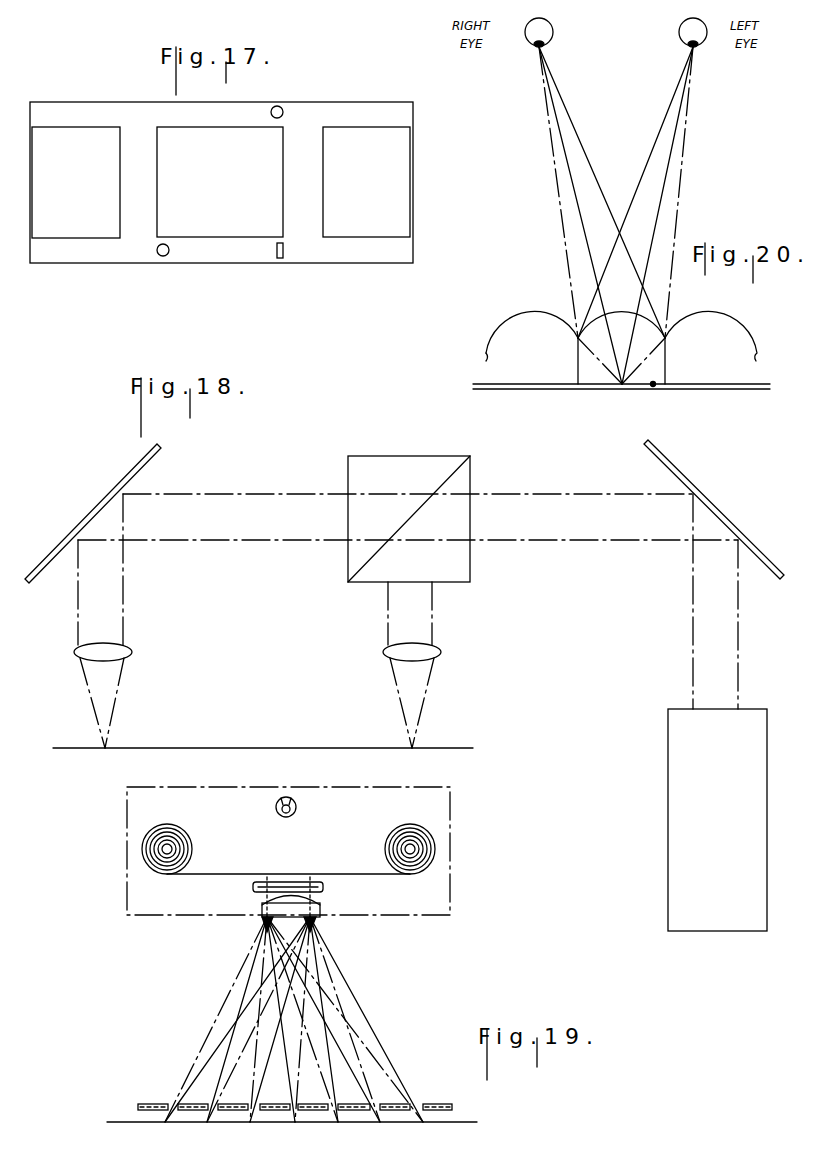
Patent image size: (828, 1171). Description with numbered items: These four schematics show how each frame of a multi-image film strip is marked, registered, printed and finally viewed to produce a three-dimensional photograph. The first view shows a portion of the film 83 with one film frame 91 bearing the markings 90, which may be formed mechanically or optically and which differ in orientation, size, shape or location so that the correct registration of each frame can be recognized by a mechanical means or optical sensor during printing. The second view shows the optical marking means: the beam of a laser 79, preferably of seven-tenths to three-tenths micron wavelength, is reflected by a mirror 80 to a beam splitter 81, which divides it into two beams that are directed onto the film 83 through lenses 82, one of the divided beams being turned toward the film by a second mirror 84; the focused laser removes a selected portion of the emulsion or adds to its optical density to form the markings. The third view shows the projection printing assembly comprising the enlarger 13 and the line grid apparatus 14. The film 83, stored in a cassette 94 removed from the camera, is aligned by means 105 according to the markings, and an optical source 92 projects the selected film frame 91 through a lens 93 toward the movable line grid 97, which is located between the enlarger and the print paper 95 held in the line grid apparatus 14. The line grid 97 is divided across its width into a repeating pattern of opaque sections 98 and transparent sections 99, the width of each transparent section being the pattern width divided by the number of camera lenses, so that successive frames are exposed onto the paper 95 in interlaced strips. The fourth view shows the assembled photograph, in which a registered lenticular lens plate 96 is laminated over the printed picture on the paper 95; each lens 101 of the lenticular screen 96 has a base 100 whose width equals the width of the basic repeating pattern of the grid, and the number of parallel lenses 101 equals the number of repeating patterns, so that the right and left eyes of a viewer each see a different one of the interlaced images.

In FIG. 19, the enlarger 13 is at (452, 852).
In FIG. 19, the line grid apparatus 14 is at (284, 1019).
In FIG. 18, the laser 79 is at (668, 765).
In FIG. 18, the mirror 80 is at (705, 468).
In FIG. 18, the beam splitter 81 is at (472, 470).
In FIG. 18, the lenses 82 is at (133, 652).
In FIG. 17, the film 83 is at (117, 265).
In FIG. 18, the film 83 is at (294, 748).
In FIG. 19, the film 83 is at (300, 874).
In FIG. 18, the mirror 84 is at (140, 463).
In FIG. 17, the markings 90 is at (285, 112).
In FIG. 17, the film frame 91 is at (227, 190).
In FIG. 19, the optical source 92 is at (292, 800).
In FIG. 19, the lens 93 is at (320, 908).
In FIG. 19, the cassette 94 is at (412, 826).
In FIG. 20, the print paper 95 is at (763, 384).
In FIG. 19, the print paper 95 is at (468, 1122).
In FIG. 20, the lenticular lens plate 96 is at (627, 334).
In FIG. 19, the movable line grid 97 is at (452, 1102).
In FIG. 19, the opaque sections 98 is at (145, 1103).
In FIG. 19, the transparent sections 99 is at (175, 1102).
In FIG. 20, the base 100 is at (657, 389).
In FIG. 20, the lens 101 is at (708, 313).
In FIG. 19, the aligning means 105 is at (323, 888).